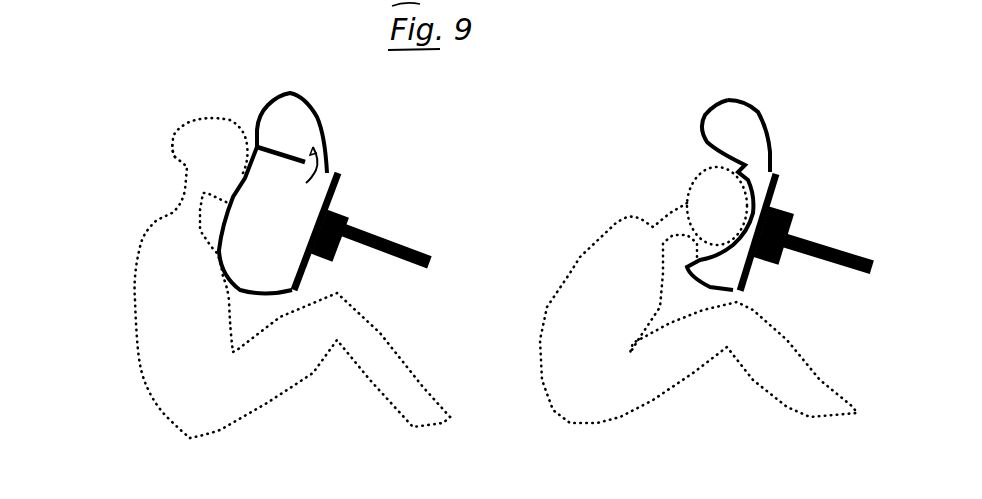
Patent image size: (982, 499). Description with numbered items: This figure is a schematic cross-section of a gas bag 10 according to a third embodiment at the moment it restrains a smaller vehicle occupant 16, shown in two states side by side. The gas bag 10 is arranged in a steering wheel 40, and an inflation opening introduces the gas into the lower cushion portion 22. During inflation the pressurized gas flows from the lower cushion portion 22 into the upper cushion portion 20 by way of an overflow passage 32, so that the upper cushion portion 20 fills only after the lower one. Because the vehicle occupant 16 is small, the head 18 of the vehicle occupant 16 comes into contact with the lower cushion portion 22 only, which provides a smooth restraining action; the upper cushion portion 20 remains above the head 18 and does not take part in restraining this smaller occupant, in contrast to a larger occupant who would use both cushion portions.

The gas bag 10 is at (554, 200).
The vehicle occupant 16 is at (138, 352).
The head 18 is at (218, 157).
The upper cushion portion 20 is at (287, 107).
The lower cushion portion 22 is at (271, 254).
The overflow passage 32 is at (331, 161).
The steering wheel 40 is at (341, 193).